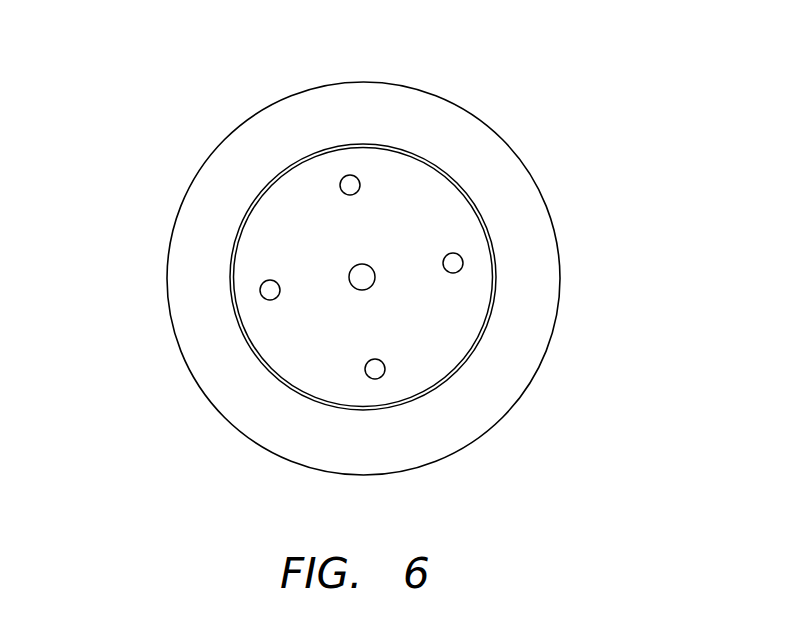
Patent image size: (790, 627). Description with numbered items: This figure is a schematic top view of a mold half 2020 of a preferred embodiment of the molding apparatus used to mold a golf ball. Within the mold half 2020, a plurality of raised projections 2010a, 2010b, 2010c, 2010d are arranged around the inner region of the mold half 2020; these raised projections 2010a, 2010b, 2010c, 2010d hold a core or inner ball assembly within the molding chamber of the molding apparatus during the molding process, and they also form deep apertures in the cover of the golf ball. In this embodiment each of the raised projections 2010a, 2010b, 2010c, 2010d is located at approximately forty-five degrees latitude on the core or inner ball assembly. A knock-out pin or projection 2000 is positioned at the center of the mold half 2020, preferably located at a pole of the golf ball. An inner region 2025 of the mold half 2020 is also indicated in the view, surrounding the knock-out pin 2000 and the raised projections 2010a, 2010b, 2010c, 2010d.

The knock-out pin 2000 is at (376, 248).
The raised projection 2010a is at (343, 176).
The raised projection 2010b is at (263, 297).
The raised projection 2010c is at (461, 254).
The raised projection 2010d is at (385, 372).
The mold half 2020 is at (235, 175).
The inner disc region 2025 is at (442, 320).